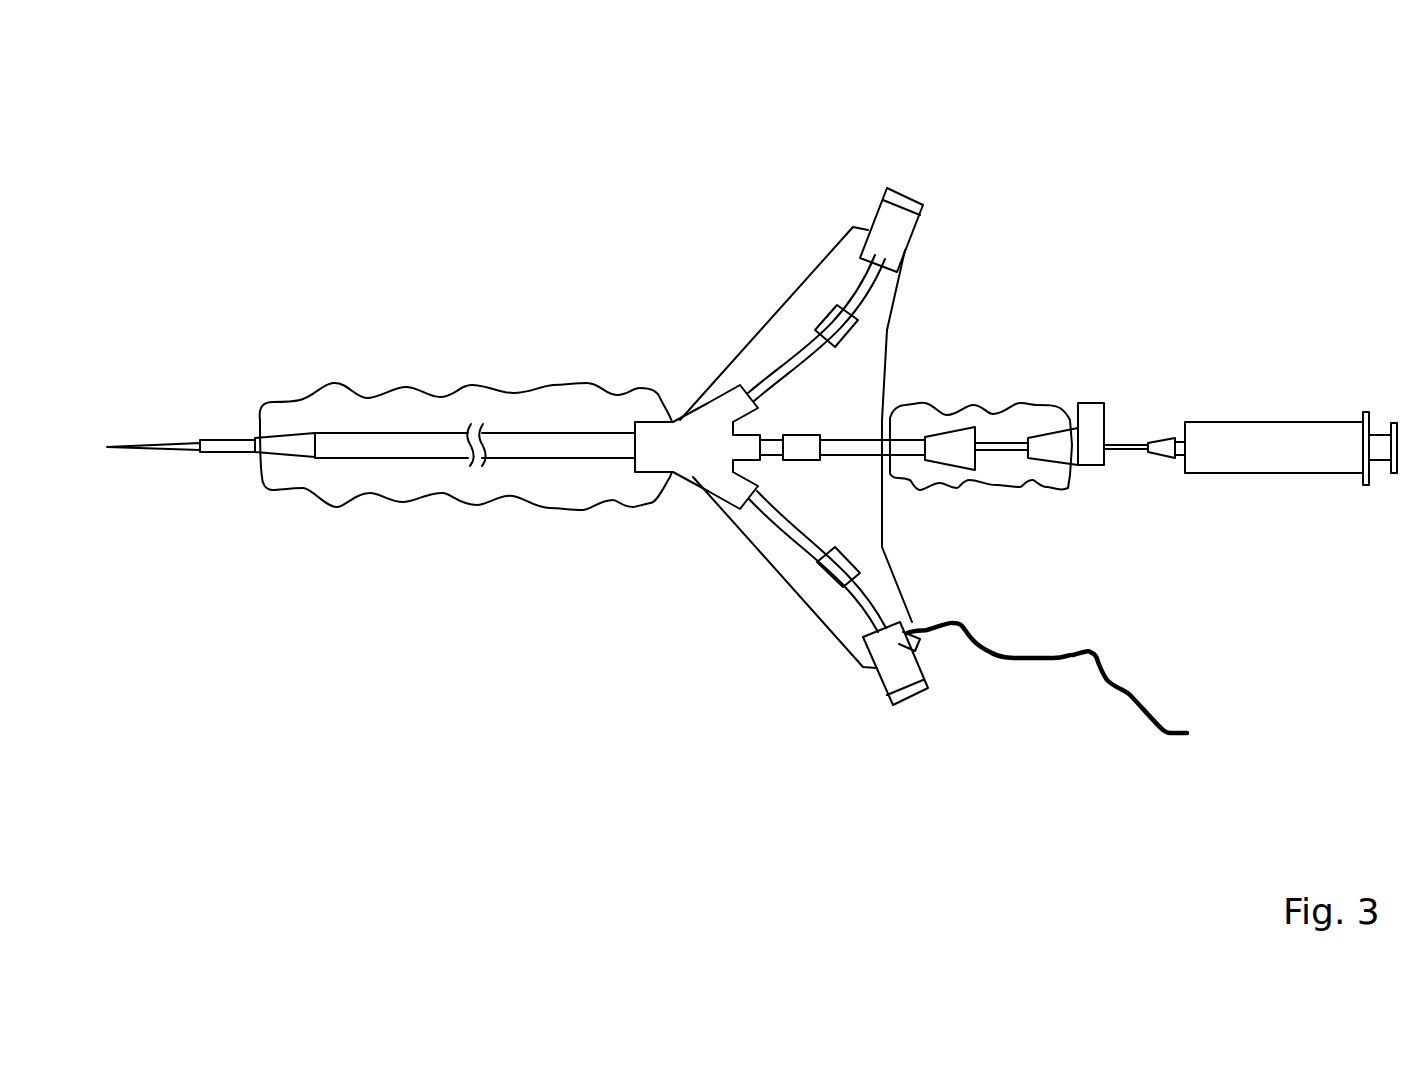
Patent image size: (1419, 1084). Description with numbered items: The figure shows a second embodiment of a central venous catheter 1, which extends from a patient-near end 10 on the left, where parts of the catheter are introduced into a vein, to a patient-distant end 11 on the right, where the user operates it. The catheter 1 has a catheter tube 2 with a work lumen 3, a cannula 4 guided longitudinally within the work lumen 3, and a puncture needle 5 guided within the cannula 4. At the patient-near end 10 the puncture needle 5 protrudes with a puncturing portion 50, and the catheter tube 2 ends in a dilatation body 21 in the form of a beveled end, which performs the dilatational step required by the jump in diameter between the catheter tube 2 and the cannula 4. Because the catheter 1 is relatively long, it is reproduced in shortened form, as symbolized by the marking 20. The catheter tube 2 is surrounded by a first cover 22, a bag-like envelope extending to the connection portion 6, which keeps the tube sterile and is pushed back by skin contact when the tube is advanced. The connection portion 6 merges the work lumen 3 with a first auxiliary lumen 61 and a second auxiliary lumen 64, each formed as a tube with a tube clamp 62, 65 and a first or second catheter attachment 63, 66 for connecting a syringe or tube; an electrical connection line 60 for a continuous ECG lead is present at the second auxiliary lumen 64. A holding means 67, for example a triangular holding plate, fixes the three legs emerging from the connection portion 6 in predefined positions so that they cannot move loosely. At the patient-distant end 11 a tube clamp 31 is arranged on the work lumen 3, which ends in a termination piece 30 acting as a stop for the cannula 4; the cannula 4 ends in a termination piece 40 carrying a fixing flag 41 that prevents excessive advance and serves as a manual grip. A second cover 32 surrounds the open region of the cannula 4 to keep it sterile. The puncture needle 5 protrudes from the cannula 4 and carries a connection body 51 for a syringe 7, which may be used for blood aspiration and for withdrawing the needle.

The catheter 1 is at (478, 158).
The patient-near end 10 is at (223, 367).
The puncturing portion 50 is at (153, 407).
The puncture needle 5 is at (152, 452).
The cannula 4 is at (223, 450).
The dilatation body 21 is at (300, 450).
The catheter tube 2 is at (417, 457).
The marking 20 is at (480, 460).
The first cover 22 is at (553, 383).
The connection portion 6 is at (694, 481).
The tube clamp 31 is at (800, 440).
The work lumen 3 is at (862, 455).
The termination piece 30 is at (950, 443).
The second cover 32 is at (1002, 492).
The termination piece 40 is at (1060, 457).
The fixing flag 41 is at (1092, 400).
The connection body 51 is at (1165, 444).
The syringe 7 is at (1305, 462).
The patient-distant end 11 is at (1180, 290).
The holding means 67 is at (790, 297).
The first auxiliary lumen 61 is at (773, 375).
The tube clamp 62 is at (842, 325).
The first catheter attachment 63 is at (903, 227).
The second auxiliary lumen 64 is at (780, 523).
The tube clamp 65 is at (830, 572).
The second catheter attachment 66 is at (893, 678).
The electrical connection line 60 is at (1058, 660).